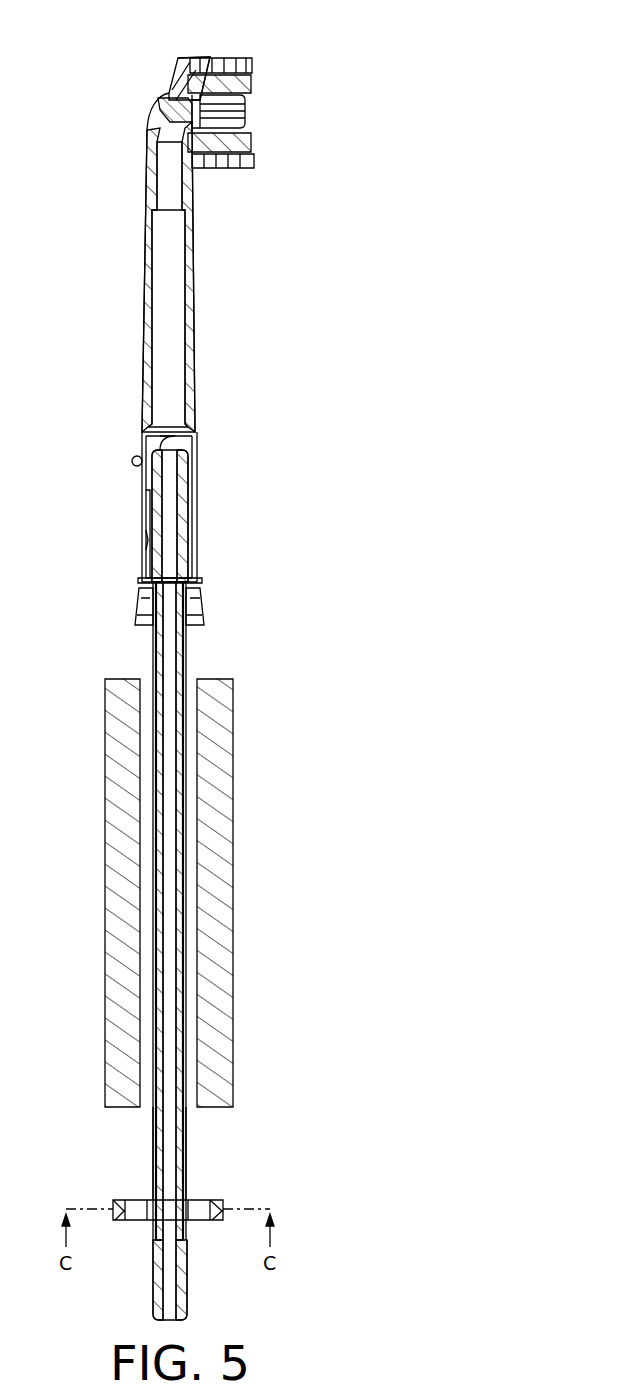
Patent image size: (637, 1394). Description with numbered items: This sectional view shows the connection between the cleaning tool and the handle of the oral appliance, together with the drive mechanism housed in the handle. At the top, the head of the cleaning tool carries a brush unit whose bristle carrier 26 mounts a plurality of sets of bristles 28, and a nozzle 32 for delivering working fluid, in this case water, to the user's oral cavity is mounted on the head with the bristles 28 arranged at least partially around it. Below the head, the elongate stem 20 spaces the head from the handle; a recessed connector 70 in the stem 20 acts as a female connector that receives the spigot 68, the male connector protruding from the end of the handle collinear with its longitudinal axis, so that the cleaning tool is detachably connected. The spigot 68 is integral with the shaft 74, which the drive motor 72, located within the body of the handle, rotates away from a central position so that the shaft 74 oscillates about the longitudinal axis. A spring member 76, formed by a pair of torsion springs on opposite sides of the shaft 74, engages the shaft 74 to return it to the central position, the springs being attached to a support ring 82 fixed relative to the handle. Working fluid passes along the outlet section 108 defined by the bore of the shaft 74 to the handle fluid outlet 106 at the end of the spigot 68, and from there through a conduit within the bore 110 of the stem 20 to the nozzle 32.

The stem 20 is at (196, 370).
The bristle carrier 26 is at (186, 58).
The bristles 28 is at (232, 66).
The nozzle 32 is at (168, 117).
The spigot 68 is at (180, 500).
The recessed connector 70 is at (185, 445).
The drive motor 72 is at (230, 878).
The shaft 74 is at (178, 648).
The spring member 76 is at (236, 1194).
The support ring 82 is at (216, 1222).
The handle fluid outlet 106 is at (162, 456).
The outlet section 108 is at (170, 1138).
The bore 110 is at (158, 268).